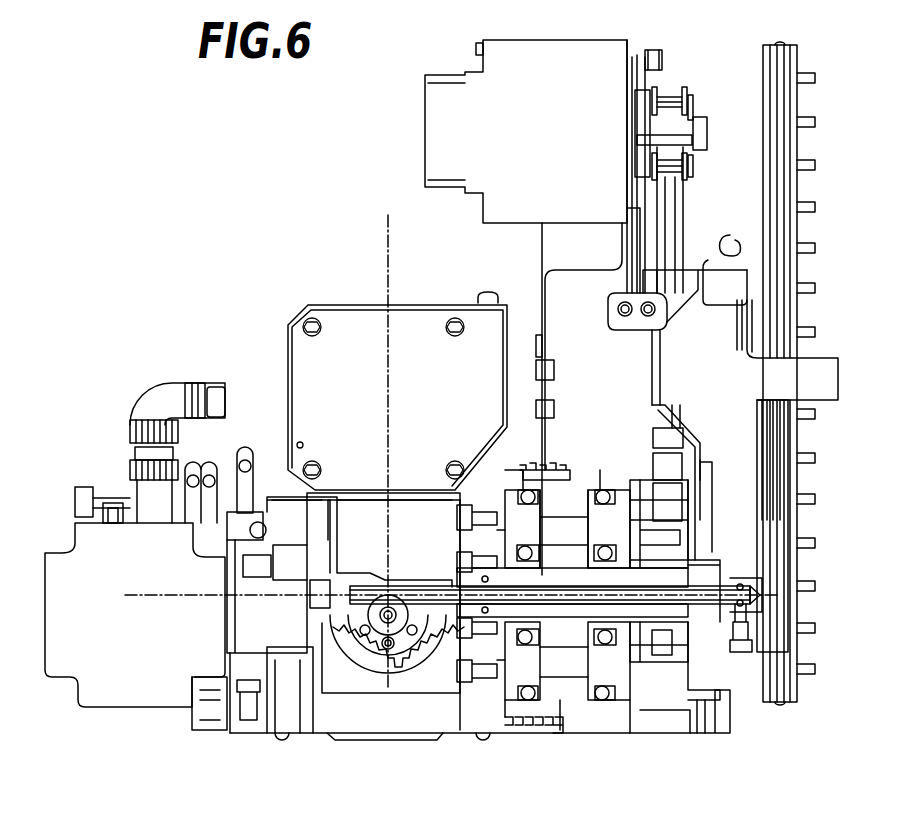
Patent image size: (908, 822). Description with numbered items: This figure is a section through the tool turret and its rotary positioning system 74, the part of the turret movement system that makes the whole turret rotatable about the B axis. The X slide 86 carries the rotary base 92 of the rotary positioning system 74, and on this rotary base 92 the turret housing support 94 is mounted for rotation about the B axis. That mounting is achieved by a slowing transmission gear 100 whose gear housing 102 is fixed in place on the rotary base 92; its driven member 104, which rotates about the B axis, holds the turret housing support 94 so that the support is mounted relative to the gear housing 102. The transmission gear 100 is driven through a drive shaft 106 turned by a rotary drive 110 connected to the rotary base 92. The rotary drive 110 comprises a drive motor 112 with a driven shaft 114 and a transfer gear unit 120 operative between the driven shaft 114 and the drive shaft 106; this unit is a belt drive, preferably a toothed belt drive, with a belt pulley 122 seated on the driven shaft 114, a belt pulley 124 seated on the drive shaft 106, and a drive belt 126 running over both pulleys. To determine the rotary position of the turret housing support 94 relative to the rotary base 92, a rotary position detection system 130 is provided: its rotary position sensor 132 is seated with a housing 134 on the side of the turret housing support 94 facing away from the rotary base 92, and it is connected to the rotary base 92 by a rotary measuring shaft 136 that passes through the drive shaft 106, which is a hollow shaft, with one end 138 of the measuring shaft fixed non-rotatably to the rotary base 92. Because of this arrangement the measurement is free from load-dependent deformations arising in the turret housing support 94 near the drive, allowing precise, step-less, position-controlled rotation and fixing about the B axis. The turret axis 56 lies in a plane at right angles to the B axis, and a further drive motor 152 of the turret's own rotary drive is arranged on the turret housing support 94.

The turret axis 56 is at (408, 640).
The rotary positioning system 74 is at (705, 442).
The X slide 86 is at (706, 343).
The rotary base 92 is at (585, 376).
The turret housing support 94 is at (385, 718).
The transmission gear 100 is at (572, 520).
The gear housing 102 is at (582, 457).
The driven member 104 is at (446, 465).
The drive shaft 106 is at (660, 553).
The rotary drive 110 is at (688, 192).
The drive motor 112 is at (608, 77).
The driven shaft 114 is at (700, 134).
The transfer gear unit 120 is at (677, 227).
The belt pulley 122 is at (667, 112).
The belt pulley 124 is at (676, 531).
The drive belt 126 is at (668, 272).
The rotary position detection system 130 is at (320, 540).
The rotary position sensor 132 is at (270, 605).
The housing 134 is at (285, 643).
The rotary measuring shaft 136 is at (665, 596).
The end 138 is at (762, 600).
The drive motor 152 is at (308, 357).